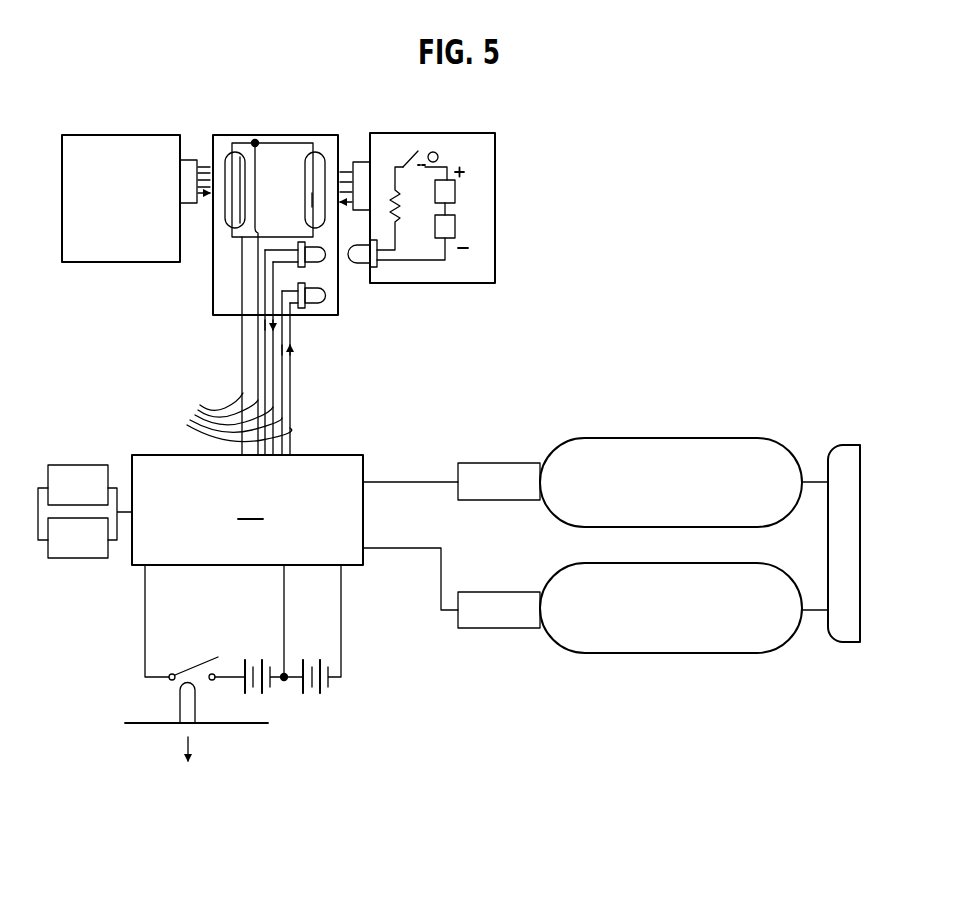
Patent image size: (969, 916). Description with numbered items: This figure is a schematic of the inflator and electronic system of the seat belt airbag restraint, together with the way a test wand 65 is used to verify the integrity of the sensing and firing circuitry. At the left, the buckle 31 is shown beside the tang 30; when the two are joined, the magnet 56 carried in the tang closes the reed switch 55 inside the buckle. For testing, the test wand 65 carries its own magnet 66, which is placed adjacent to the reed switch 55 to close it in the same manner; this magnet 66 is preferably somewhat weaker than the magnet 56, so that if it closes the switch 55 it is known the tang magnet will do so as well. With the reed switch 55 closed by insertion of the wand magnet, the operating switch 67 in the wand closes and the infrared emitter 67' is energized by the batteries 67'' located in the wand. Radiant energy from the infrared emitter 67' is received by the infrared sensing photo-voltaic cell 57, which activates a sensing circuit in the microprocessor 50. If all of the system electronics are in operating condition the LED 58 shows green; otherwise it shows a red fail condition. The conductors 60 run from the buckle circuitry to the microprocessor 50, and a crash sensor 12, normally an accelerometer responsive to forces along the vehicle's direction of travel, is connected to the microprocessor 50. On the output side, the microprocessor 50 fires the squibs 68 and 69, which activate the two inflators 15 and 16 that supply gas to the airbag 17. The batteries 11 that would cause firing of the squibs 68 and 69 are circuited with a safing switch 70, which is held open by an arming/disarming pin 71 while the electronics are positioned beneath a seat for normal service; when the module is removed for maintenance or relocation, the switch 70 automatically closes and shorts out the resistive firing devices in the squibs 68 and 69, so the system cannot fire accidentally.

The batteries 11 is at (317, 649).
The crash sensor 12 is at (89, 462).
The inflator 15 is at (660, 447).
The inflator 16 is at (708, 653).
The airbag 17 is at (840, 633).
The tang 30 is at (213, 295).
The buckle 31 is at (140, 262).
The microprocessor 50 is at (295, 532).
The reed switch 55 is at (303, 143).
The magnet 56 is at (190, 160).
The infrared sensing photo-voltaic cell 57 is at (315, 258).
The LED 58 is at (315, 303).
The conductors 60 is at (228, 299).
The test wand 65 is at (457, 208).
The magnet 66 is at (358, 162).
The operating switch 67 is at (426, 129).
The infrared emitter 67' is at (380, 282).
The batteries 67'' is at (500, 209).
The squib 68 is at (500, 468).
The squib 69 is at (490, 628).
The safing switch 70 is at (195, 656).
The arming/disarming pin 71 is at (180, 705).